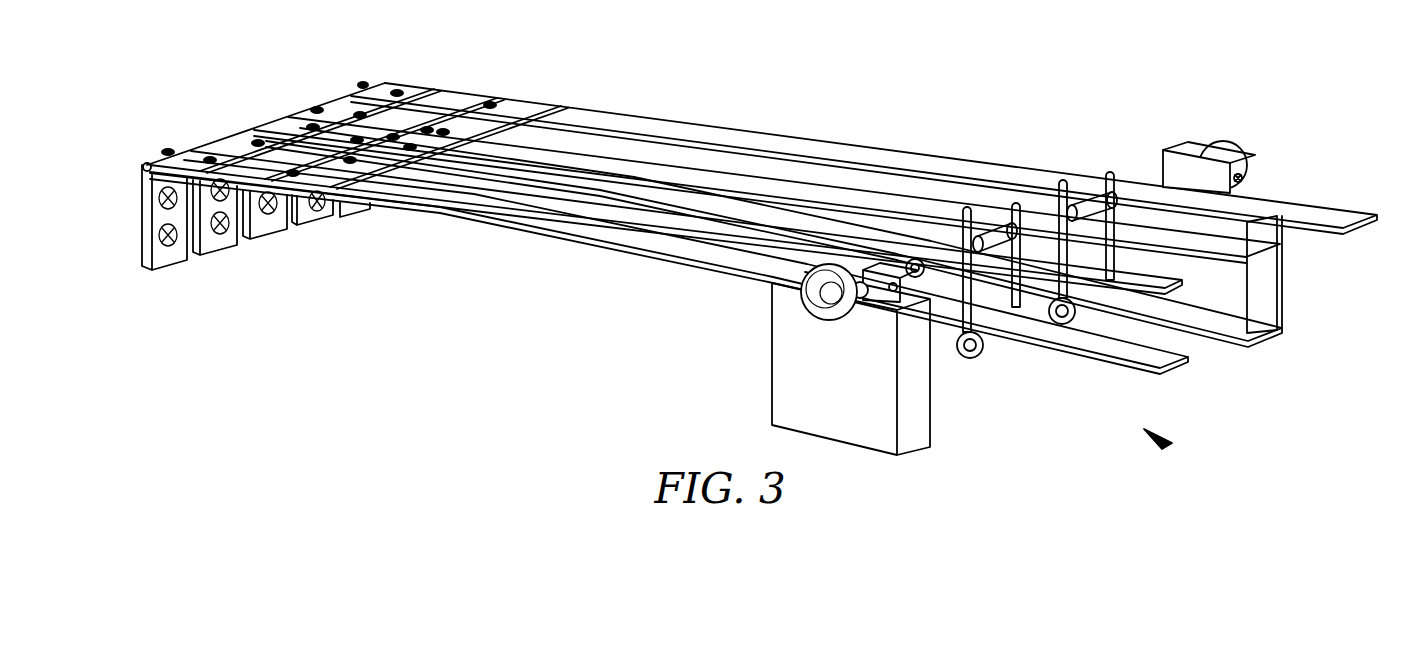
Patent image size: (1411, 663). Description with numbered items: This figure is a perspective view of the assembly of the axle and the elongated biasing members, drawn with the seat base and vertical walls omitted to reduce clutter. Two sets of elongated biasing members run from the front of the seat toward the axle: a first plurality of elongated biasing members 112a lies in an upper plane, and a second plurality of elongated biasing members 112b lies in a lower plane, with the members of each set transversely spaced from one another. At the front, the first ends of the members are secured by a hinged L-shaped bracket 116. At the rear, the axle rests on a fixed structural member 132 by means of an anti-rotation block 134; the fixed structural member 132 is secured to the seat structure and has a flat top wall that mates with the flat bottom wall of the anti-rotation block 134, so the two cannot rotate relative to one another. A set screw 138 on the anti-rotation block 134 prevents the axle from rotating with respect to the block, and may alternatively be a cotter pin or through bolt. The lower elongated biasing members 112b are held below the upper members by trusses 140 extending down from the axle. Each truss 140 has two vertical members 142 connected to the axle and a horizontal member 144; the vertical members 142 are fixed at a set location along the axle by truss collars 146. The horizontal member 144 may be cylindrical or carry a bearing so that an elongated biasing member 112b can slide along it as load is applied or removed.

The first plurality of elongated biasing members 112a is at (573, 203).
The second plurality of elongated biasing members 112b is at (1273, 343).
The hinged L-shaped bracket 116 is at (317, 104).
The fixed structural member 132 is at (913, 406).
The anti-rotation block 134 is at (875, 295).
The set screw 138 is at (1250, 177).
The truss 140 is at (1172, 445).
The vertical member 142 is at (1067, 177).
The horizontal member 144 is at (1000, 355).
The truss collar 146 is at (1100, 195).